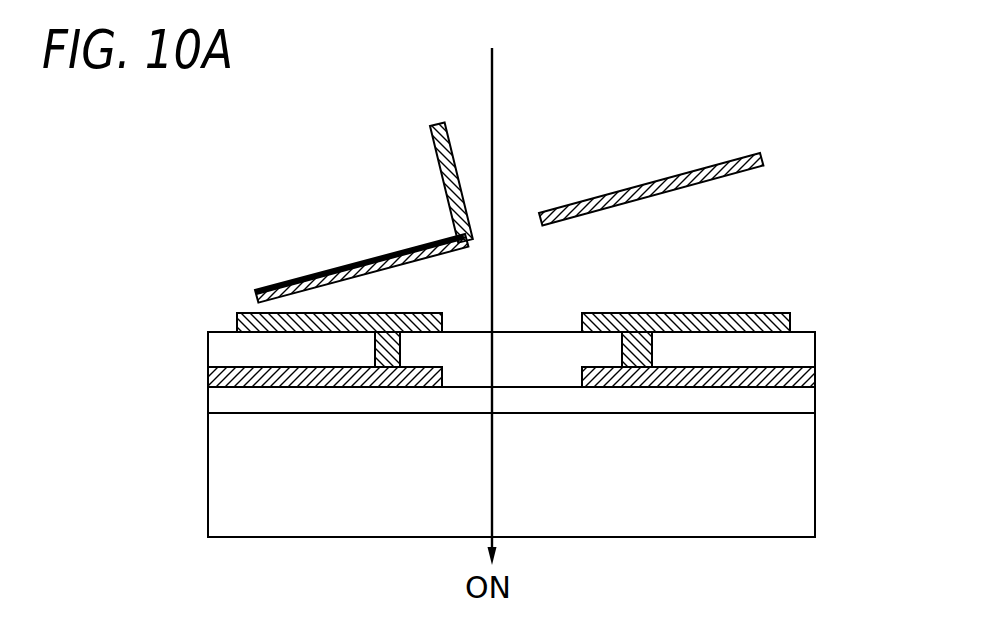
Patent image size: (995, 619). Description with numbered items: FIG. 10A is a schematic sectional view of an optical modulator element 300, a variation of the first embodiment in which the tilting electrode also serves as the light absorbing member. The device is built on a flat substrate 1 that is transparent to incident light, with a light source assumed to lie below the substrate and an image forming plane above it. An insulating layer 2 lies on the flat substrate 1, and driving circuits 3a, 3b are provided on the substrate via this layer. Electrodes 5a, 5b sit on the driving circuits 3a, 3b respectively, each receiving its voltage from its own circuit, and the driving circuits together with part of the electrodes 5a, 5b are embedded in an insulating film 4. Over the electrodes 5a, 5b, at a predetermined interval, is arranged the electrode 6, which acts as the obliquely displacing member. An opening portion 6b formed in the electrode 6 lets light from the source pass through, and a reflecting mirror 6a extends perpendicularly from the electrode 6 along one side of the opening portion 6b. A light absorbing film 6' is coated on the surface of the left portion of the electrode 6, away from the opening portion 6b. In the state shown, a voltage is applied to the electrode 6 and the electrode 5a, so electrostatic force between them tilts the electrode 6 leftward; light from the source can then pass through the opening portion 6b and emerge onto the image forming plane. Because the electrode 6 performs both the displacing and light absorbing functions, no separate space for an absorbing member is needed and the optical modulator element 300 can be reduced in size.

The flat substrate 1 is at (810, 477).
The insulating layer 2 is at (815, 407).
The driving circuit 3a is at (208, 375).
The driving circuit 3b is at (815, 377).
The insulating film 4 is at (811, 347).
The electrode 5a is at (236, 327).
The electrode 5b is at (789, 315).
The electrode 6 is at (509, 207).
The light absorbing film 6' is at (360, 239).
The reflecting mirror 6a is at (435, 146).
The opening portion 6b is at (526, 204).
The optical modulator element 300 is at (828, 213).